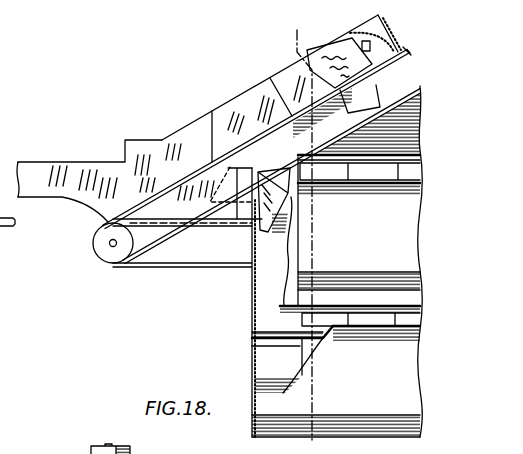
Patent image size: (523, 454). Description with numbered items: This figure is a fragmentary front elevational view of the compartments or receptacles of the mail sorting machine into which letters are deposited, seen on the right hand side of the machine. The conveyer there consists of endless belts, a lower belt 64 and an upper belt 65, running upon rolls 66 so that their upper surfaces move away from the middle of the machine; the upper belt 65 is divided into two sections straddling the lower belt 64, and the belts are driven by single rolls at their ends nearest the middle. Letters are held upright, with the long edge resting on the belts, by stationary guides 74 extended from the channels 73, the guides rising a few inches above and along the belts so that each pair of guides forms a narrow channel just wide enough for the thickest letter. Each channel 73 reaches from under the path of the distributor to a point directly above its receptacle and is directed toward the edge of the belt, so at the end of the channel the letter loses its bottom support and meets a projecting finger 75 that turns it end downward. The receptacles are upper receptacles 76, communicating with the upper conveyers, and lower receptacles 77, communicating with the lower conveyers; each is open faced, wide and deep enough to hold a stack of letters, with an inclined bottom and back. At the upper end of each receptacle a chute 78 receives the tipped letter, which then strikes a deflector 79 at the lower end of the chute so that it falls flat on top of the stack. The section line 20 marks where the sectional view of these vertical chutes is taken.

The section line 20— 20 is at (290, 35).
The lower endless belt 64 is at (185, 265).
The upper endless belt 65 is at (204, 166).
The roll 66 is at (114, 257).
The channel 73 is at (97, 141).
The stationary guide 74 is at (250, 80).
The projecting finger 75 is at (350, 32).
The upper receptacle 76 is at (360, 261).
The lower receptacle 77 is at (336, 371).
The chute 78 is at (238, 297).
The deflector 79 is at (255, 334).